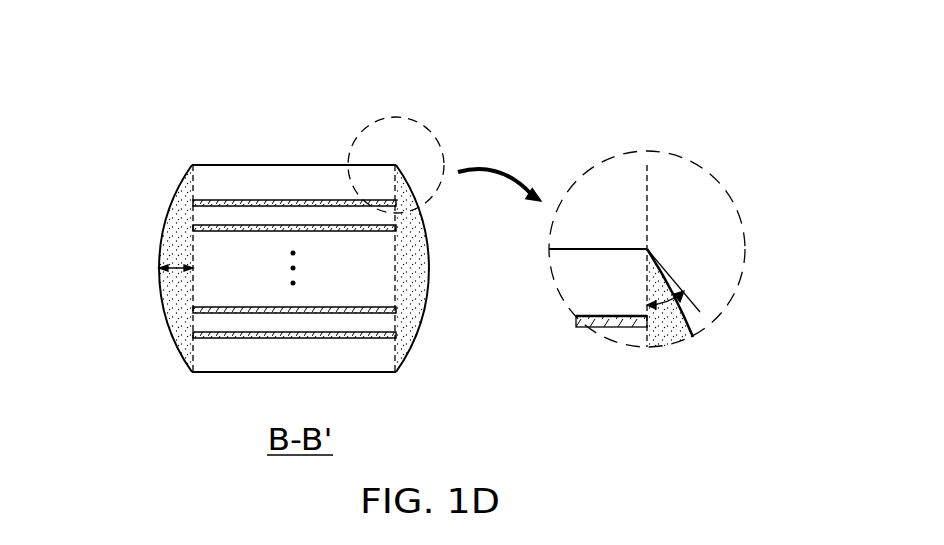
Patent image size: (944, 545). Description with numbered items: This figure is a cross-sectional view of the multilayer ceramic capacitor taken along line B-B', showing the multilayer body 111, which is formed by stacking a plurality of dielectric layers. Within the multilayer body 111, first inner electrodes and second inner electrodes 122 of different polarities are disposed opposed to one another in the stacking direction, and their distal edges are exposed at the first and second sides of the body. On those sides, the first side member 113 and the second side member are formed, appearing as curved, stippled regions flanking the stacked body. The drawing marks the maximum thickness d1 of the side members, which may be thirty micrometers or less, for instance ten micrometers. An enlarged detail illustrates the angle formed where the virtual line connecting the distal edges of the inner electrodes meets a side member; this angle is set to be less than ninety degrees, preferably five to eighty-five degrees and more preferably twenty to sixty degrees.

The multilayer body 111 is at (294, 157).
The first side member 113 is at (177, 225).
The second inner electrode 122 is at (177, 337).
The maximum thickness of the first and second side members d1 is at (177, 270).